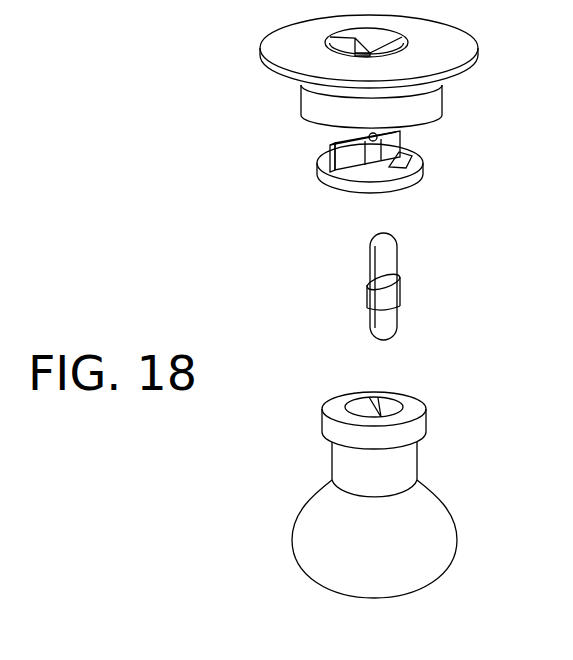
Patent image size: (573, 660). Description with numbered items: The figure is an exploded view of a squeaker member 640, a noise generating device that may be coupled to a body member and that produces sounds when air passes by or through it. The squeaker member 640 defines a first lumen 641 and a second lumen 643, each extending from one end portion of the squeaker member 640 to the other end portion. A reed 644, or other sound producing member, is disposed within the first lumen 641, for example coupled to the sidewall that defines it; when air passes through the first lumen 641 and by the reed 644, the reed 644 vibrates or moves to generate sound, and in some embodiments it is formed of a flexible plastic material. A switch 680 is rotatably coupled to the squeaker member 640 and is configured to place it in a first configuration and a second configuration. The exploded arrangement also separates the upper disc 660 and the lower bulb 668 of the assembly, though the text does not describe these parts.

The squeaker member 640 is at (230, 149).
The cap disc 660 is at (460, 58).
The switch 680 is at (418, 177).
The reed 644 is at (390, 300).
The first lumen 641 is at (393, 404).
The second lumen 643 is at (352, 405).
The bulb body 668 is at (430, 523).